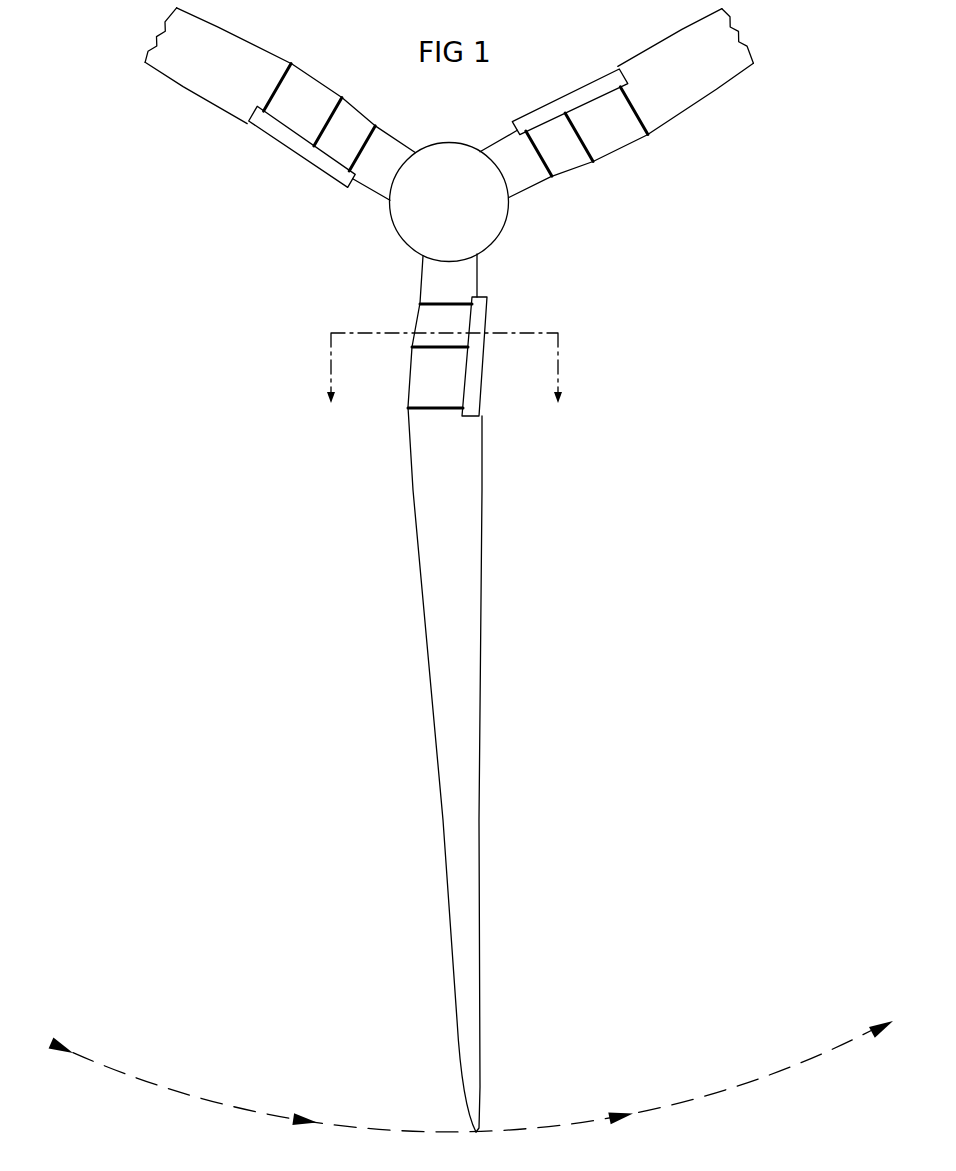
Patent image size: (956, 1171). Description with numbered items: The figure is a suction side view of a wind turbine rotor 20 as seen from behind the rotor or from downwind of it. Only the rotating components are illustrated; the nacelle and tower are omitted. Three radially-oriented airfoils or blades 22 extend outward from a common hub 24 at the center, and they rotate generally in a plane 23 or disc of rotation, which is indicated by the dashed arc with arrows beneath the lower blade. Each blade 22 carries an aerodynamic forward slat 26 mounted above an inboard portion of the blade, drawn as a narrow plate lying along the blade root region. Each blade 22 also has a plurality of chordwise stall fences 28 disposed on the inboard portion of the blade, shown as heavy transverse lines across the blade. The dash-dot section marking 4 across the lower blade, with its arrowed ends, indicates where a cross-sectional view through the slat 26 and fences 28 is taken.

The wind turbine rotor 20 is at (322, 285).
The blade 22 is at (214, 82).
The plane of rotation 23 is at (365, 1128).
The hub 24 is at (437, 213).
The aerodynamic forward slat 26 is at (477, 370).
The chordwise stall fence 28 is at (440, 303).
The section line 4- 4 is at (446, 384).